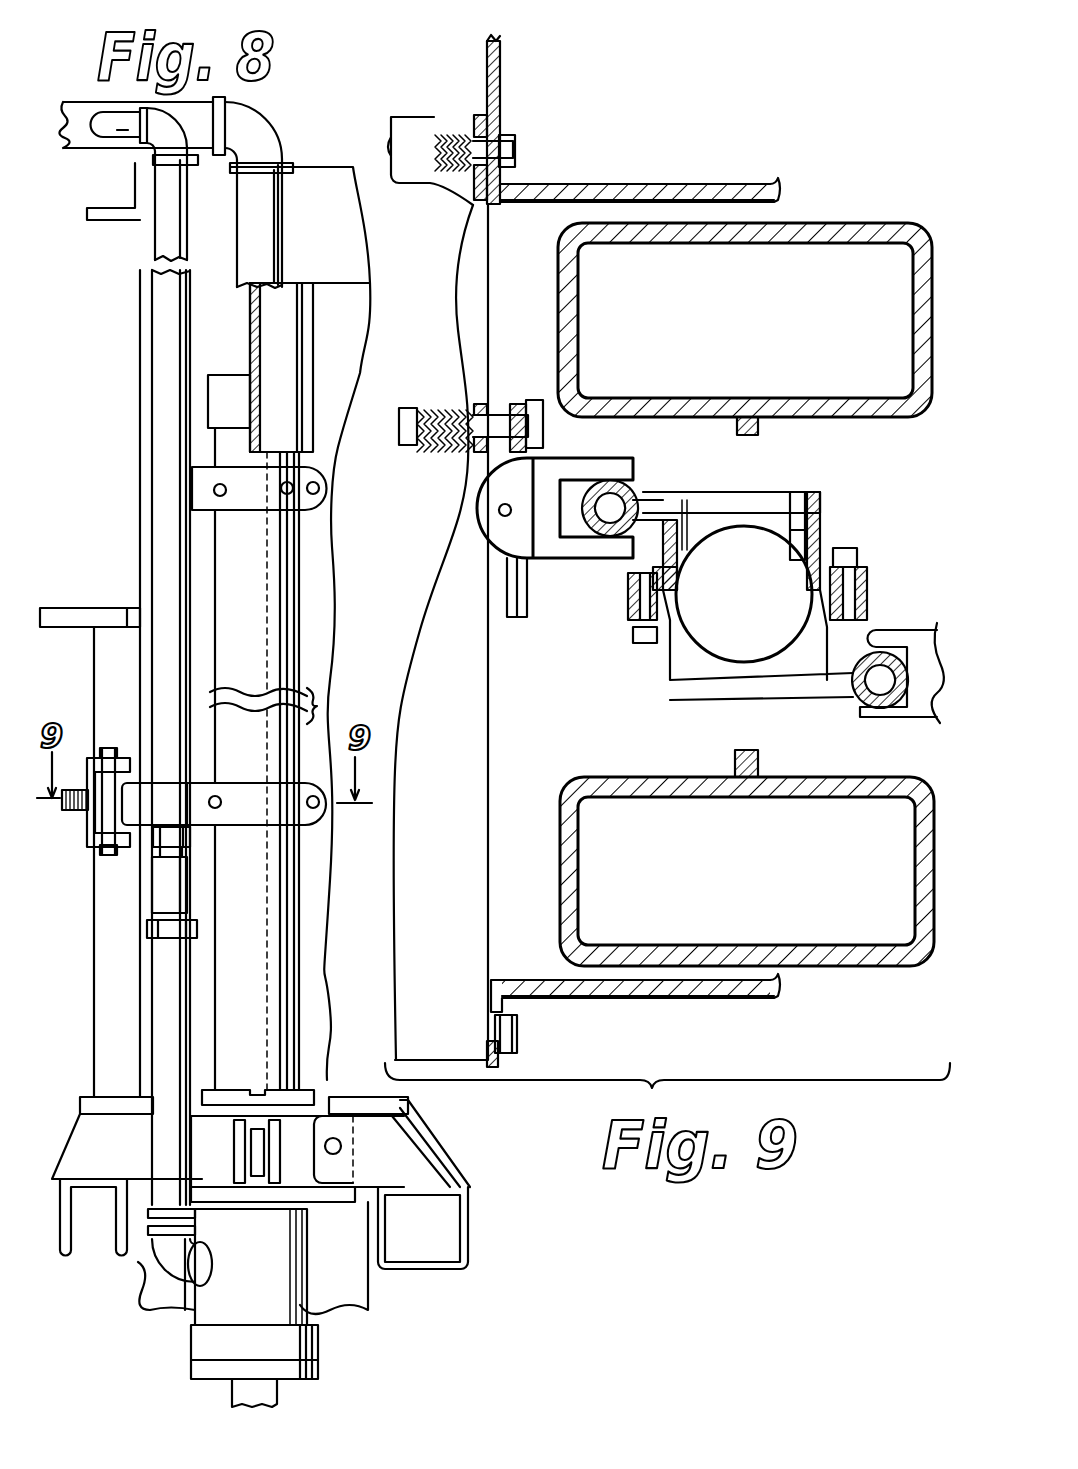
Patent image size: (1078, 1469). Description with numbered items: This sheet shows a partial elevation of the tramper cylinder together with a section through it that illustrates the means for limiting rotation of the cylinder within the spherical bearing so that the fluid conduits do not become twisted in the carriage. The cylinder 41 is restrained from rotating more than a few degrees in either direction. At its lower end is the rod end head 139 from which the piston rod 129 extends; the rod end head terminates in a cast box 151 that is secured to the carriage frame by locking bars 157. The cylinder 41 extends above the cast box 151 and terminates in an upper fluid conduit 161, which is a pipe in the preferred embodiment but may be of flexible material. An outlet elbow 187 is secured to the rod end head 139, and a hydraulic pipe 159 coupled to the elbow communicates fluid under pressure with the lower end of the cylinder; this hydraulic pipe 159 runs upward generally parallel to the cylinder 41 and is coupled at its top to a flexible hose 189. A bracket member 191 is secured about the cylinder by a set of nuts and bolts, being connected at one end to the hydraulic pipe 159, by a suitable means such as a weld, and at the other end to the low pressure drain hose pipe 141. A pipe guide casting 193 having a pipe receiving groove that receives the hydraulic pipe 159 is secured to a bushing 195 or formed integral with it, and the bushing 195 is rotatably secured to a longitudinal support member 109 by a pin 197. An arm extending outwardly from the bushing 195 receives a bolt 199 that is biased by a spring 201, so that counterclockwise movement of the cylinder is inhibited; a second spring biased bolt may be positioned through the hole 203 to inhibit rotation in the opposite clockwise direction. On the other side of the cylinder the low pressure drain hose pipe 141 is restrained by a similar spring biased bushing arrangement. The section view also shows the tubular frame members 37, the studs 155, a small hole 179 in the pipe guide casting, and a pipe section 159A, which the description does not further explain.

In FIG. 9, the tubular frame member 37 is at (580, 337).
In FIG. 8, the cylinder 41 is at (297, 570).
In FIG. 9, the cylinder 41 is at (717, 630).
In FIG. 8, the longitudinal support member 109 is at (52, 820).
In FIG. 9, the longitudinal support member 109 is at (447, 551).
In FIG. 8, the piston rod 129 is at (280, 1394).
In FIG. 8, the rod end head 139 is at (254, 1294).
In FIG. 9, the low pressure drain hose pipe 141 is at (907, 630).
In FIG. 8, the cast box 151 is at (329, 1092).
In FIG. 9, the stud 155 is at (758, 430).
In FIG. 8, the locking bars 157 is at (452, 1133).
In FIG. 8, the hydraulic pipe 159 is at (167, 433).
In FIG. 9, the hydraulic pipe 159 is at (633, 484).
In FIG. 8, the pipe section 159A is at (168, 1030).
In FIG. 8, the upper fluid conduit 161 is at (278, 190).
In FIG. 9, the hole 179 is at (520, 512).
In FIG. 8, the outlet elbow 187 is at (150, 1295).
In FIG. 8, the flexible hose 189 is at (130, 128).
In FIG. 8, the bracket member 191 is at (312, 826).
In FIG. 9, the bracket member 191 is at (687, 683).
In FIG. 8, the pipe guide casting 193 is at (154, 804).
In FIG. 9, the pipe guide casting 193 is at (555, 489).
In FIG. 8, the bushing 195 is at (126, 825).
In FIG. 9, the bushing 195 is at (535, 563).
In FIG. 8, the pin 197 is at (112, 748).
In FIG. 8, the bolt 199 is at (90, 812).
In FIG. 9, the bolt 199 is at (498, 400).
In FIG. 8, the spring 201 is at (66, 812).
In FIG. 9, the spring 201 is at (454, 404).
In FIG. 9, the hole 203 is at (502, 612).